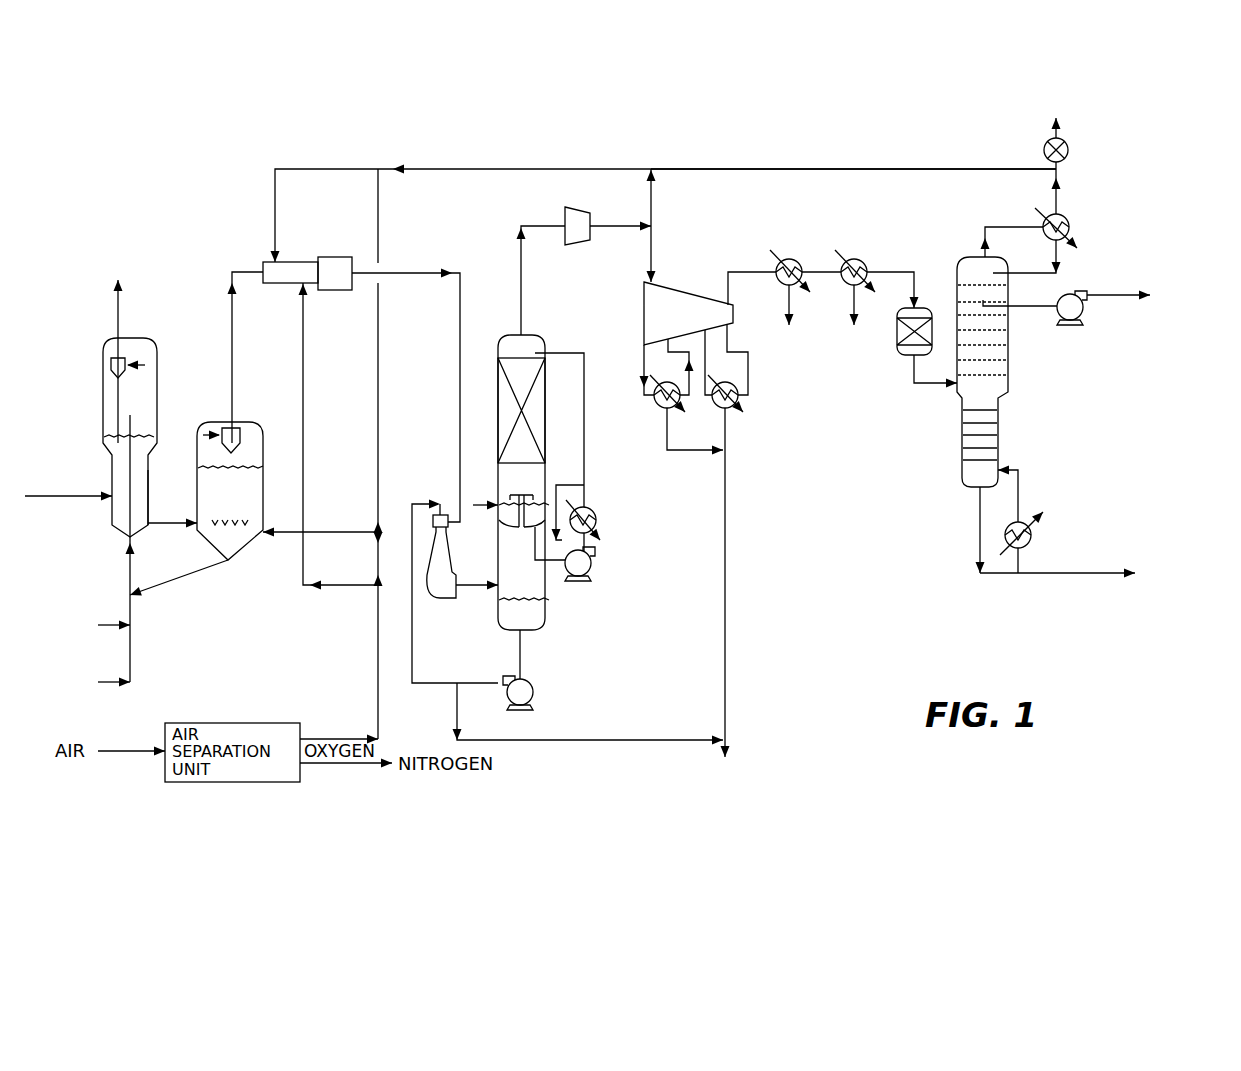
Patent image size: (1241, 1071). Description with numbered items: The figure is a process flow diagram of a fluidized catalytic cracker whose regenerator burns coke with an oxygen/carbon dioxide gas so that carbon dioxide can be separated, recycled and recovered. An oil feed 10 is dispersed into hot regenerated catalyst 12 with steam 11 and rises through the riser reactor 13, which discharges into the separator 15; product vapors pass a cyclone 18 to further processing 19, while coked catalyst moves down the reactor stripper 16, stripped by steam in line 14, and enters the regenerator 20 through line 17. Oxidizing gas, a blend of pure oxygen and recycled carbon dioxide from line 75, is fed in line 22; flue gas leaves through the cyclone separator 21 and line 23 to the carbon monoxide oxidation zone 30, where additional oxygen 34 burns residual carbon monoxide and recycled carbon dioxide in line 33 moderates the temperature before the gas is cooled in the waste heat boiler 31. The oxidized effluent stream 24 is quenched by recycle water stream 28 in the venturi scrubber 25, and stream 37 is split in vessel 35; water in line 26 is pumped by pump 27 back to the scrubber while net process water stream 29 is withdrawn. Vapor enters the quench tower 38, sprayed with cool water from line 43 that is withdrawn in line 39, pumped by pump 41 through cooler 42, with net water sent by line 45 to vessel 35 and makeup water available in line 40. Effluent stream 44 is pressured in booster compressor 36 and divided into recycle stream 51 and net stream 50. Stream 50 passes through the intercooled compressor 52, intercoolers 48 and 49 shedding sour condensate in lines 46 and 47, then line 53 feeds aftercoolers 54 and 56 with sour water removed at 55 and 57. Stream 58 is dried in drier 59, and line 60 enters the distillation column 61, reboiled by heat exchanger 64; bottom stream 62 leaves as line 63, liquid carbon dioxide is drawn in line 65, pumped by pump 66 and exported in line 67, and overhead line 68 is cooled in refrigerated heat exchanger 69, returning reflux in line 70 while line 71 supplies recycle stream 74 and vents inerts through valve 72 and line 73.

The oil feed 10 is at (107, 622).
The steam 11 is at (106, 678).
The hot regenerated catalyst line 12 is at (167, 576).
The riser reactor 13 is at (126, 563).
The steam line 14 is at (77, 497).
The separator 15 is at (103, 412).
The reactor stripper 16 is at (148, 497).
The spent catalyst line 17 is at (170, 523).
The cyclone 18 is at (110, 365).
The further processing 19 is at (118, 318).
The regenerator 20 is at (263, 515).
The cyclone separator 21 is at (242, 440).
The oxidizing gas line 22 is at (358, 531).
The flue gas line 23 is at (232, 352).
The oxidized effluent stream 24 is at (456, 349).
The venturi scrubber 25 is at (440, 600).
The water line 26 is at (518, 666).
The pump 27 is at (533, 684).
The recycle water stream 28 is at (414, 630).
The net process water stream 29 is at (583, 740).
The carbon monoxide oxidation zone 30 is at (288, 253).
The waste heat boiler 31 is at (335, 273).
The recycle carbon dioxide line 33 is at (293, 169).
The additional oxygen line 34 is at (305, 360).
The separator vessel 35 is at (546, 625).
The booster compressor 36 is at (608, 226).
The venturi scrubber effluent stream 37 is at (470, 597).
The quench tower 38 is at (530, 337).
The quench water withdrawal line 39 is at (543, 578).
The makeup water line 40 is at (478, 512).
The pump 41 is at (573, 582).
The cooler 42 is at (594, 524).
The cool water spray line 43 is at (585, 404).
The effluent stream 44 is at (524, 289).
The net process water line 45 is at (563, 485).
The sour condensate line 46 is at (694, 453).
The sour condensate line 47 is at (726, 442).
The intercooling heat exchanger 48 is at (661, 384).
The intercooling heat exchanger 49 is at (719, 384).
The net combustion gas stream 50 is at (653, 259).
The recycle stream 51 is at (653, 194).
The multistaged intercooled compressor 52 is at (688, 313).
The compressed effluent line 53 is at (752, 269).
The aftercooler heat exchanger 54 is at (790, 260).
The sour water removal 55 is at (784, 306).
The aftercooler heat exchanger 56 is at (855, 260).
The sour water removal 57 is at (848, 296).
The effluent stream 58 is at (900, 272).
The drier 59 is at (897, 365).
The dried effluent line 60 is at (924, 386).
The distillation column 61 is at (1008, 380).
The bottom stream 62 is at (975, 512).
The net bottom stream line 63 is at (1070, 580).
The reboiler heat exchanger 64 is at (1032, 546).
The liquid carbon dioxide sidestream line 65 is at (1046, 310).
The pump 66 is at (1086, 314).
The export line 67 is at (1102, 293).
The overhead stream line 68 is at (1020, 227).
The refrigerated heat exchanger 69 is at (1070, 226).
The reflux line 70 is at (1065, 255).
The uncondensed overhead line 71 is at (1062, 196).
The valve 72 is at (1068, 156).
The vent line 73 is at (1060, 132).
The recycle carbon dioxide stream 74 is at (836, 169).
The recycle line 75 is at (384, 398).